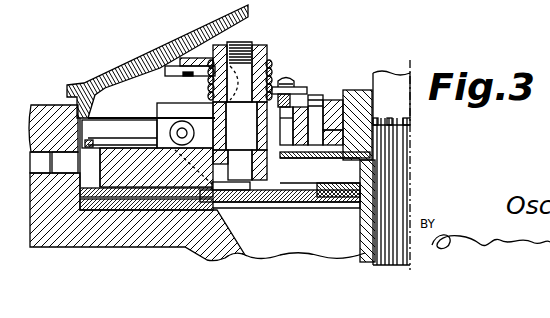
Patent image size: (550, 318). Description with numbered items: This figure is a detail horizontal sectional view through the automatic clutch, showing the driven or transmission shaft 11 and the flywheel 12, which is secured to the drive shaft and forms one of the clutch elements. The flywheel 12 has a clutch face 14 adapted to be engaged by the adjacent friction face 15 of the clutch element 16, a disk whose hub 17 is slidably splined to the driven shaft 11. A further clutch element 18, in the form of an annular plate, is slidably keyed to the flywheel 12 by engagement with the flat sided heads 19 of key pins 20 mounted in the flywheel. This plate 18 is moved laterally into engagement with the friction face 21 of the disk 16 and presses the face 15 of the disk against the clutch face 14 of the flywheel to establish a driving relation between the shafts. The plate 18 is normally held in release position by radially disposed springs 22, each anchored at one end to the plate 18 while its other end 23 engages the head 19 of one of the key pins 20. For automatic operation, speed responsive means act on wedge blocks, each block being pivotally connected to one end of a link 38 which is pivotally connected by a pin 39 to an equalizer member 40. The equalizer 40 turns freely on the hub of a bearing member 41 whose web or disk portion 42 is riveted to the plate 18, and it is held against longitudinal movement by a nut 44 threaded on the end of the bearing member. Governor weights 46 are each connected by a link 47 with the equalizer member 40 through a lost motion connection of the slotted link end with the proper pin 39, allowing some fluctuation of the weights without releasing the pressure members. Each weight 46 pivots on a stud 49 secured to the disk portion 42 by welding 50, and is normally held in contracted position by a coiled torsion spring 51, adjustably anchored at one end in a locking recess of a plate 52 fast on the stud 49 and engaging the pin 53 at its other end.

The driven shaft 11 is at (398, 213).
The flywheel 12 is at (52, 230).
The clutch face 14 is at (100, 213).
The friction face 15 is at (128, 213).
The clutch element 16 is at (278, 204).
The hub 17 is at (360, 217).
The clutch element 18 is at (160, 212).
The head 19 is at (106, 153).
The key pin 20 is at (63, 160).
The friction face 21 is at (217, 217).
The spring 22 is at (133, 138).
The end 23 is at (89, 140).
The link 38 is at (335, 134).
The pin 39 is at (335, 108).
The equalizer member 40 is at (410, 127).
The bearing member 41 is at (370, 113).
The web or disk portion 42 is at (270, 157).
The nut 44 is at (350, 90).
The governor weight 46 is at (187, 101).
The link 47 is at (308, 95).
The stud 49 is at (230, 118).
The welding 50 is at (252, 158).
The coiled torsion spring 51 is at (268, 60).
The plate 52 is at (196, 33).
The pin 53 is at (285, 75).